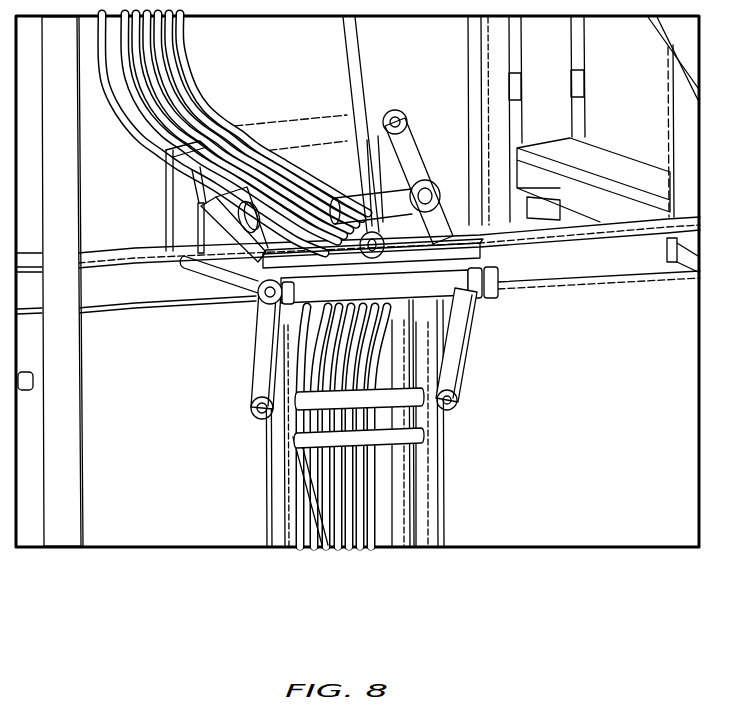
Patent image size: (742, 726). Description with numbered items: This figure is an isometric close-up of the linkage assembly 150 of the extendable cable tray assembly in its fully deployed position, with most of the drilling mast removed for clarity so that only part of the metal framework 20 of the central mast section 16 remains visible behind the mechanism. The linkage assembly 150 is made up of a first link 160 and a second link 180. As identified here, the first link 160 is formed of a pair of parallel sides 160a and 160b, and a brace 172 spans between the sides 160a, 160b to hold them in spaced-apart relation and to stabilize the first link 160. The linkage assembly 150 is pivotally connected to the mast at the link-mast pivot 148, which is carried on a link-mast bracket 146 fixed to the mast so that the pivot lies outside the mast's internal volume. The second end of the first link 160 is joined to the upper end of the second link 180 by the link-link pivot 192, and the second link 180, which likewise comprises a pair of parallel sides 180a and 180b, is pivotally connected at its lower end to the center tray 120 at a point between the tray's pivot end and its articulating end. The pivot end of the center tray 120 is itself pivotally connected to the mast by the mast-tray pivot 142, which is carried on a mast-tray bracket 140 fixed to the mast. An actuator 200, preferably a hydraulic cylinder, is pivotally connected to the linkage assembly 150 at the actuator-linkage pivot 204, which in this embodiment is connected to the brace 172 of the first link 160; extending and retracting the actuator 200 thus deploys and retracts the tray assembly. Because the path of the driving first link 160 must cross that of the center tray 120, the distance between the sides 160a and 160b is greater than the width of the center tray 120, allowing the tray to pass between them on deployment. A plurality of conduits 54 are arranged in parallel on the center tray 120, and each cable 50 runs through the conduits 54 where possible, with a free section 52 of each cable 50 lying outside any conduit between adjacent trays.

The central mast section 16 is at (649, 289).
The metal framework 20 is at (588, 202).
The cable 50 is at (168, 78).
The free section 52 is at (207, 90).
The conduits 54 is at (372, 527).
The center tray 120 is at (444, 437).
The mast-tray bracket 140 is at (228, 212).
The mast-tray pivot 142 is at (350, 195).
The link-mast bracket 146 is at (170, 203).
The link-mast pivot 148 is at (304, 124).
The linkage assembly 150 is at (399, 96).
The first link 160 is at (213, 266).
The side of first link 160a is at (236, 267).
The side of first link 160b is at (436, 222).
The brace 172 is at (448, 255).
The second link 180 is at (250, 377).
The side of second link 180a is at (267, 370).
The side of second link 180b is at (468, 347).
The link-link pivot 192 is at (448, 292).
The actuator 200 is at (370, 47).
The actuator-linkage pivot 204 is at (259, 300).